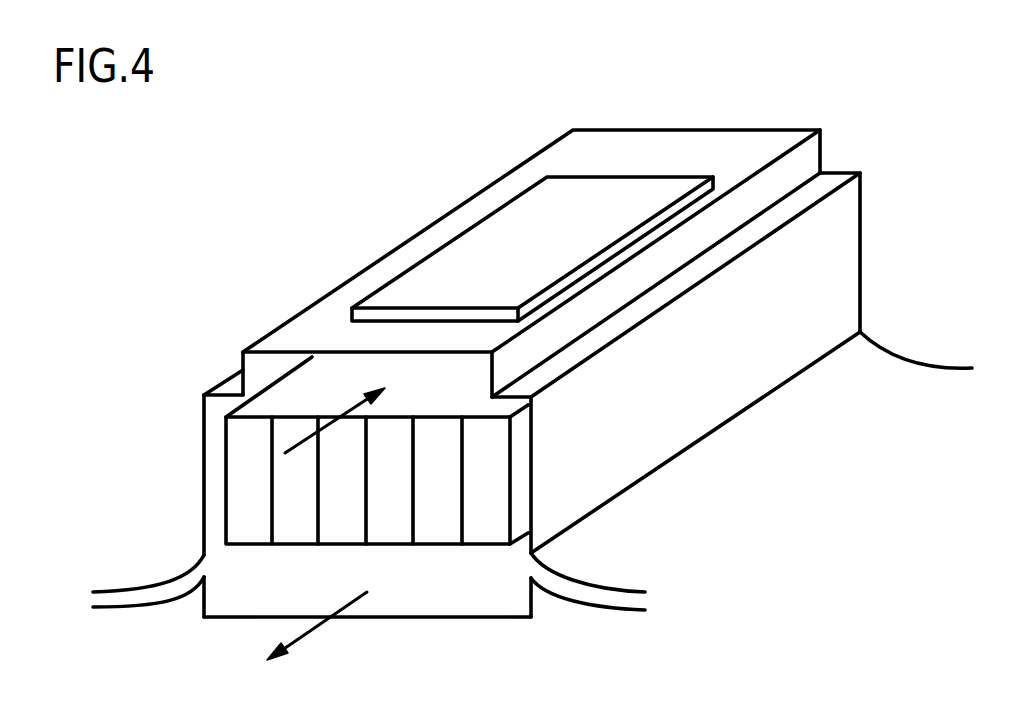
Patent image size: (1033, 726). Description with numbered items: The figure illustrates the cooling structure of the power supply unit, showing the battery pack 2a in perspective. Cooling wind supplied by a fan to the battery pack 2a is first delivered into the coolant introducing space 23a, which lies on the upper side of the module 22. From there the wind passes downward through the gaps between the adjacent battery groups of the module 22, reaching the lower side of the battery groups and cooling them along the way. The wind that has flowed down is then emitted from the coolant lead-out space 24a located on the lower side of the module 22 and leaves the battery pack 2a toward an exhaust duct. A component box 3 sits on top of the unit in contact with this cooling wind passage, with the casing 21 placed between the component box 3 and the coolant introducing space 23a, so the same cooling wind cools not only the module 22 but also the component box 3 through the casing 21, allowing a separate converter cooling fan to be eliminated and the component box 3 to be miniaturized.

The battery pack 2a is at (607, 341).
The component box 3 is at (438, 280).
The casing 21 is at (204, 468).
The module 22 is at (440, 533).
The coolant introducing space 23a is at (268, 372).
The coolant lead-out space 24a is at (223, 603).